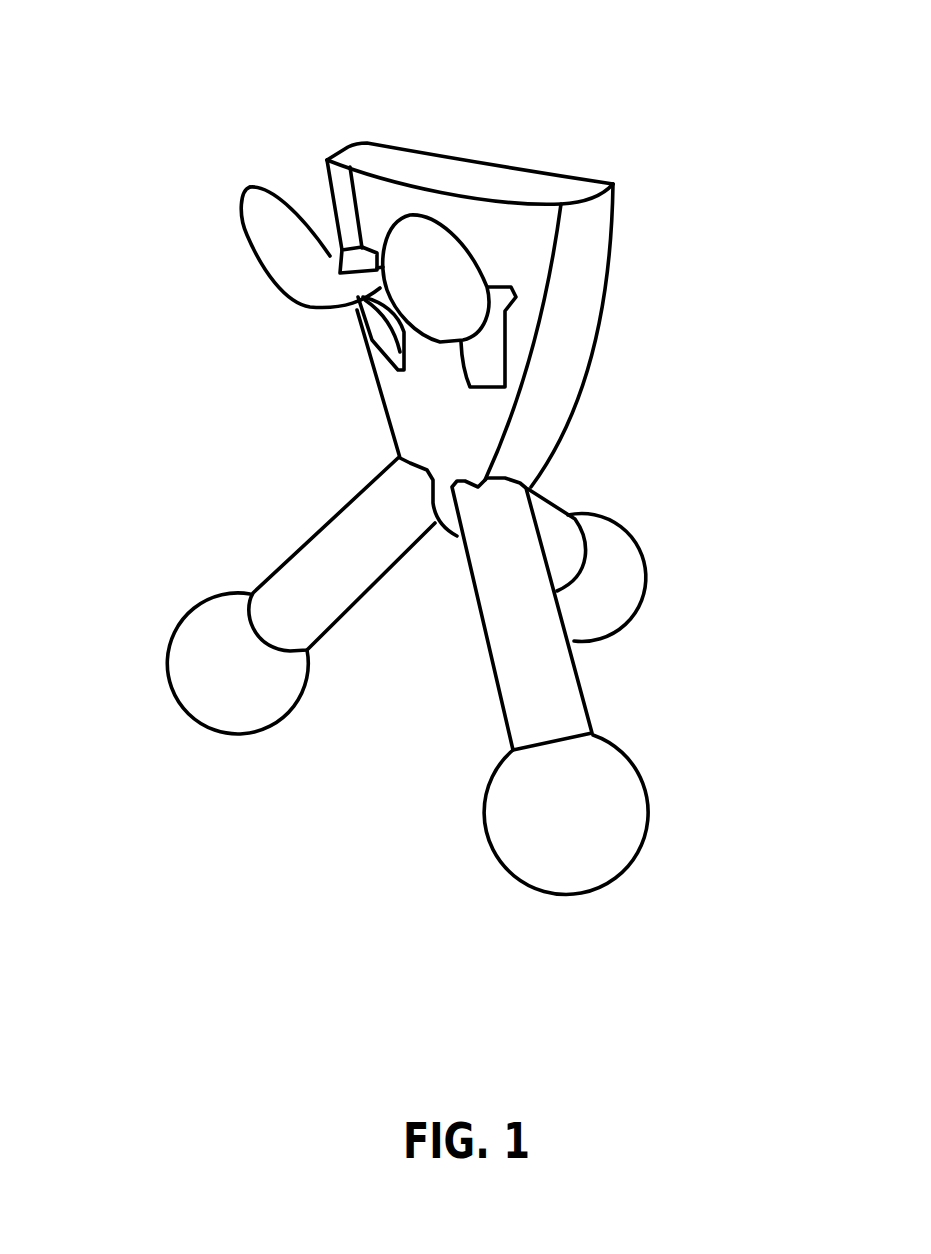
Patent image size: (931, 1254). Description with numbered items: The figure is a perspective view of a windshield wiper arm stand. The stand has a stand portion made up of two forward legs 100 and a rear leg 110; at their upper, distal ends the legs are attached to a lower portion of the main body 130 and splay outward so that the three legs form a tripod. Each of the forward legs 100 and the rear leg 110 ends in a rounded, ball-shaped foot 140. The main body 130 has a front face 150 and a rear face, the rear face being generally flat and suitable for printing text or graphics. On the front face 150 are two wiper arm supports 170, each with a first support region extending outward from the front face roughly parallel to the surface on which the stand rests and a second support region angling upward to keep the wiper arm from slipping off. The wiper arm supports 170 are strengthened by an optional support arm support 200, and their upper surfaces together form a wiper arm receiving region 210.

The forward legs 100 is at (333, 543).
The rear leg 110 is at (559, 536).
The main body 130 is at (568, 291).
The ball-shaped feet 140 is at (238, 713).
The front face 150 is at (433, 405).
The wiper arm supports 170 is at (270, 250).
The support arm support 200 is at (485, 358).
The wiper arm receiving region 210 is at (347, 157).